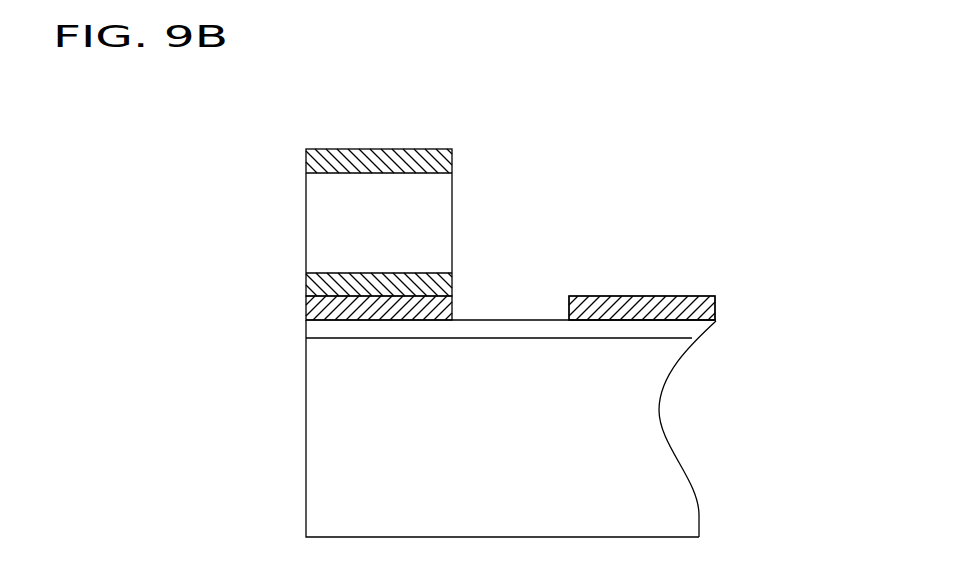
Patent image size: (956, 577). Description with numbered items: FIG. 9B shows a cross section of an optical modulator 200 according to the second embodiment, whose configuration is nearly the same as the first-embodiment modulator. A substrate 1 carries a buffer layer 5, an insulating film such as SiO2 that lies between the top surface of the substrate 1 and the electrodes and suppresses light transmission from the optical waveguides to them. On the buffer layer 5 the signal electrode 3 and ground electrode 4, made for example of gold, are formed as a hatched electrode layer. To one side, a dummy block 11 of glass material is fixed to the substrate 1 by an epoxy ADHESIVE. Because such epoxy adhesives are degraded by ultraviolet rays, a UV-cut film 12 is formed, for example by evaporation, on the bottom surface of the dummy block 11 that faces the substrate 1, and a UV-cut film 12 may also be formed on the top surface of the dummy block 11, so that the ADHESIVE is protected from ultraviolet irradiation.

The optical modulator 200 is at (618, 130).
The substrate 1 is at (333, 508).
The buffer layer 5 is at (312, 330).
The dummy block 11 is at (312, 222).
The UV-cut film 12 is at (308, 157).
The signal electrode 3 is at (648, 308).
The ground electrode 4 is at (642, 308).
The adhesive ADHESIVE is at (308, 312).